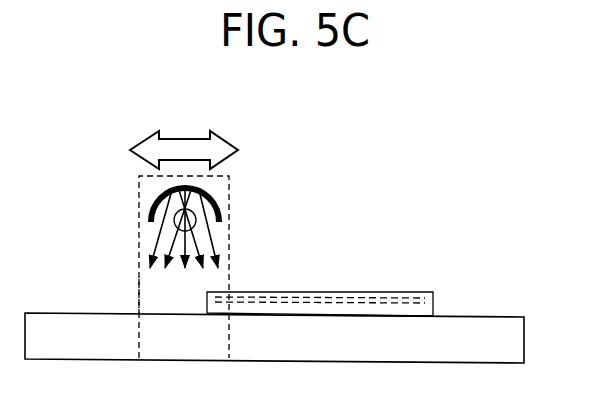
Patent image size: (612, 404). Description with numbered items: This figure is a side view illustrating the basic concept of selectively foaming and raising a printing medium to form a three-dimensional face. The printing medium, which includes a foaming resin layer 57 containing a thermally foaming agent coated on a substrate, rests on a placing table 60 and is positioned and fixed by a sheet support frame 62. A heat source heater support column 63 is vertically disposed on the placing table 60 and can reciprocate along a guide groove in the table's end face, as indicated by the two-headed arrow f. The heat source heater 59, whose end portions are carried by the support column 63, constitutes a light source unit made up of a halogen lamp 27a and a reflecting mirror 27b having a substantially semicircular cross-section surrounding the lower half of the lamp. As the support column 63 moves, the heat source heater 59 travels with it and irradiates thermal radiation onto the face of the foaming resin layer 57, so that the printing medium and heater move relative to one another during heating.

The two-headed arrow f is at (170, 136).
The heat source heater 59 is at (128, 190).
The halogen lamp 27a is at (195, 224).
The reflecting mirror 27b is at (220, 203).
The heat source heater support column 63 is at (139, 279).
The foaming resin layer 57 is at (358, 290).
The placing table 60 is at (470, 316).
The sheet support frame 62 is at (368, 318).